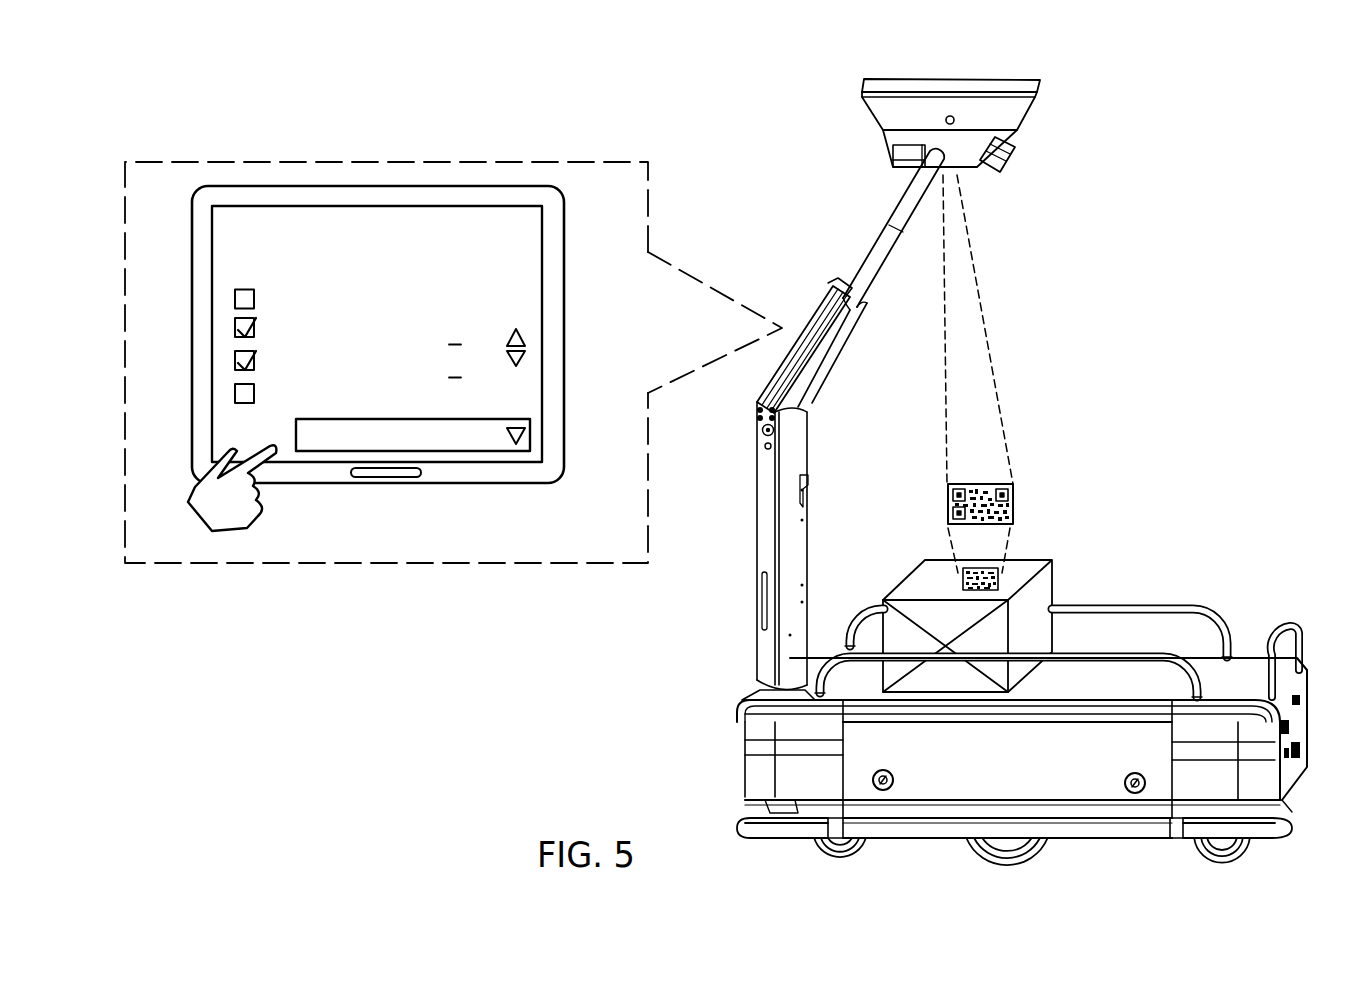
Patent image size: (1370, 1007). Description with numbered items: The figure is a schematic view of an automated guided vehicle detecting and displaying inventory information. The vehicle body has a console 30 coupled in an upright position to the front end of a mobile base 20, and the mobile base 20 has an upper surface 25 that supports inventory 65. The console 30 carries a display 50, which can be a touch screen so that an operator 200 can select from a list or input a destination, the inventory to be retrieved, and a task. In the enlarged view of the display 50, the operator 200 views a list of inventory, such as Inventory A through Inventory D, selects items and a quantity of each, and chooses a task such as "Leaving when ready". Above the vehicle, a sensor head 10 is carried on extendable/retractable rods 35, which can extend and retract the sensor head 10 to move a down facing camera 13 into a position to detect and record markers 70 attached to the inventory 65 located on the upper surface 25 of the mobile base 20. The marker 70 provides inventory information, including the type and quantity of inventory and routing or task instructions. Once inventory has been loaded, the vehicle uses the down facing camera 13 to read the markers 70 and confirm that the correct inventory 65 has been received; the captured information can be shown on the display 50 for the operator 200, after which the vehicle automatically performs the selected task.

The sensor head 10 is at (934, 77).
The down facing camera 13 is at (952, 175).
The mobile base 20 is at (755, 771).
The upper surface 25 is at (1250, 668).
The console 30 is at (765, 522).
The extendable/retractable rods 35 is at (912, 203).
The display 50 is at (262, 160).
The inventory 65 is at (1045, 582).
The marker 70 is at (1003, 503).
The operator 200 is at (252, 523).